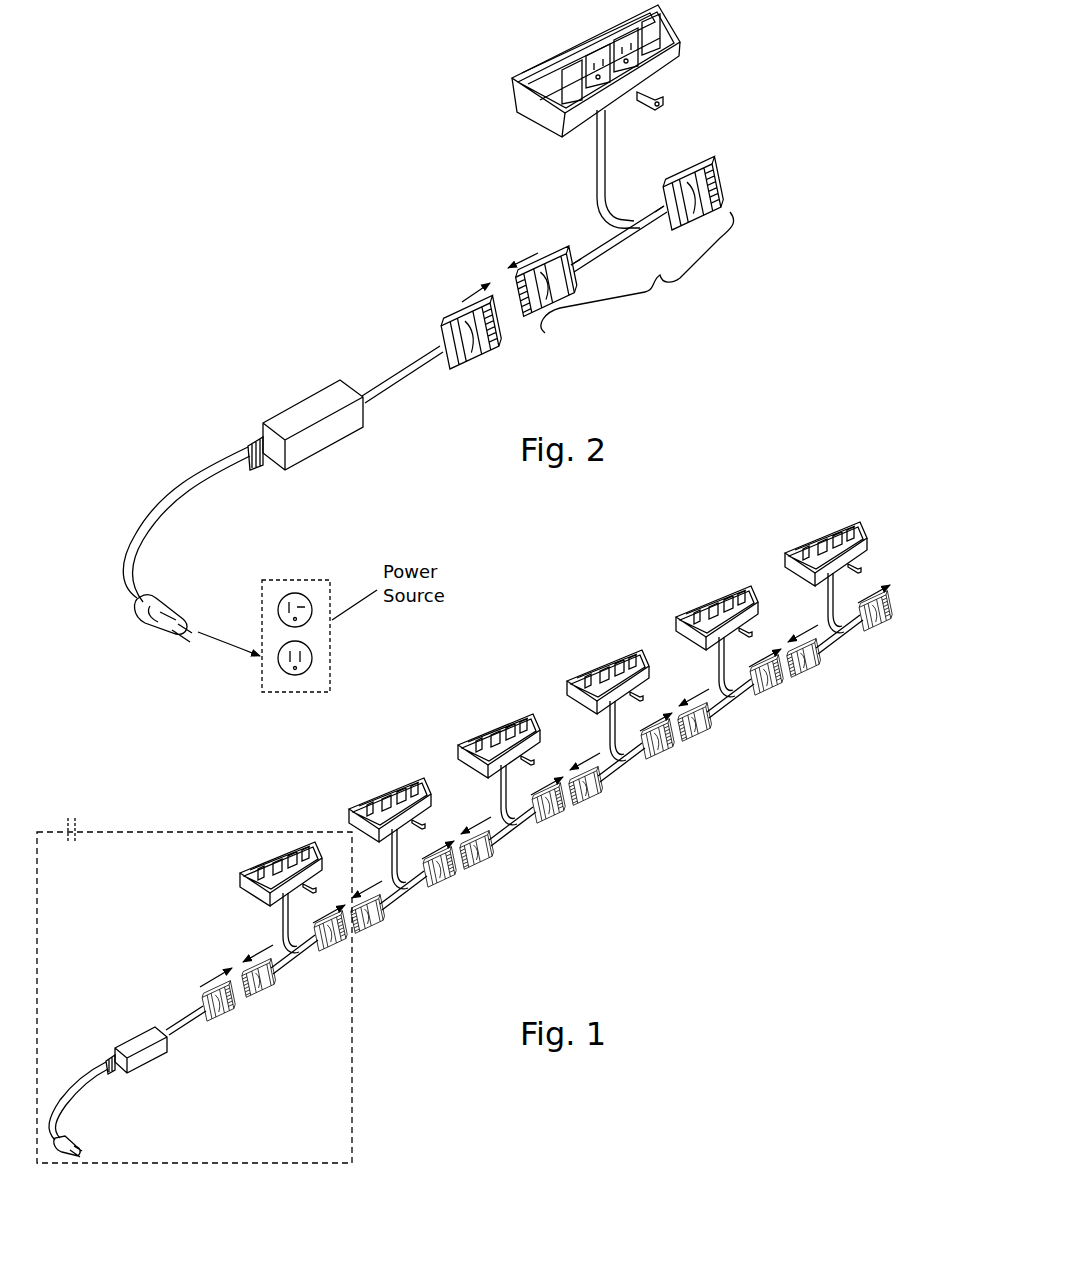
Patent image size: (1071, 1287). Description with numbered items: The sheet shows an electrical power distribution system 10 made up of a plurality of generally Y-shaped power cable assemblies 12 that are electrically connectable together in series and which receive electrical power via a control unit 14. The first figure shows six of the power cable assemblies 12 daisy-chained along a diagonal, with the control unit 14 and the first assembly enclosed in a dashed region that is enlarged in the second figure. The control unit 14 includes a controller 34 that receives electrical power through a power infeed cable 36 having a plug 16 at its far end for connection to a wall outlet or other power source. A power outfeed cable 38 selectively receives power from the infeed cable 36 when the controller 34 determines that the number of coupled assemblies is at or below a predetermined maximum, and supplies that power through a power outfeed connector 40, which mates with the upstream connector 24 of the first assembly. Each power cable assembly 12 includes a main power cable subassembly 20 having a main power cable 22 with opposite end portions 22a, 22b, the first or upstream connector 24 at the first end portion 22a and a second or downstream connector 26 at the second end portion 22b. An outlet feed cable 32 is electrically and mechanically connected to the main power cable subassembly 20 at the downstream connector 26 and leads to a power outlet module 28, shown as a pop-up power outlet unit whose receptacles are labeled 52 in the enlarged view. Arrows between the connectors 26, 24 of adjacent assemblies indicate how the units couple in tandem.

In FIG. 1, the electrical power distribution system 10 is at (716, 879).
In FIG. 2, the power cable assembly 12 is at (718, 280).
In FIG. 1, the power cable assembly 12 is at (308, 1004).
In FIG. 2, the control unit 14 is at (405, 465).
In FIG. 1, the control unit 14 is at (112, 1012).
In FIG. 2, the plug 16 is at (162, 592).
In FIG. 2, the main power cable subassembly 20 is at (637, 272).
In FIG. 2, the main power cable 22 is at (590, 257).
In FIG. 1, the main power cable 22 is at (297, 960).
In FIG. 2, the first end portion 22a is at (570, 247).
In FIG. 2, the second end portion 22b is at (645, 196).
In FIG. 2, the upstream connector 24 is at (567, 252).
In FIG. 1, the upstream connector 24 is at (262, 995).
In FIG. 2, the downstream connector 26 is at (693, 162).
In FIG. 1, the downstream connector 26 is at (340, 950).
In FIG. 2, the power outlet module 28 is at (656, 71).
In FIG. 1, the power outlet module 28 is at (245, 860).
In FIG. 2, the outlet feed cable 32 is at (598, 162).
In FIG. 1, the outlet feed cable 32 is at (283, 919).
In FIG. 2, the controller 34 is at (300, 410).
In FIG. 1, the controller 34 is at (135, 1072).
In FIG. 2, the power infeed cable 36 is at (165, 500).
In FIG. 1, the power infeed cable 36 is at (62, 1088).
In FIG. 2, the power outfeed cable 38 is at (393, 375).
In FIG. 1, the power outfeed cable 38 is at (175, 1030).
In FIG. 2, the power outfeed connector 40 is at (483, 348).
In FIG. 1, the power outfeed connector 40 is at (222, 1015).
In FIG. 2, the receptacles 52 is at (598, 80).